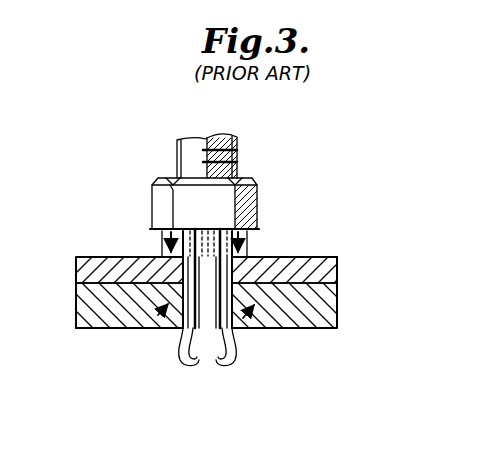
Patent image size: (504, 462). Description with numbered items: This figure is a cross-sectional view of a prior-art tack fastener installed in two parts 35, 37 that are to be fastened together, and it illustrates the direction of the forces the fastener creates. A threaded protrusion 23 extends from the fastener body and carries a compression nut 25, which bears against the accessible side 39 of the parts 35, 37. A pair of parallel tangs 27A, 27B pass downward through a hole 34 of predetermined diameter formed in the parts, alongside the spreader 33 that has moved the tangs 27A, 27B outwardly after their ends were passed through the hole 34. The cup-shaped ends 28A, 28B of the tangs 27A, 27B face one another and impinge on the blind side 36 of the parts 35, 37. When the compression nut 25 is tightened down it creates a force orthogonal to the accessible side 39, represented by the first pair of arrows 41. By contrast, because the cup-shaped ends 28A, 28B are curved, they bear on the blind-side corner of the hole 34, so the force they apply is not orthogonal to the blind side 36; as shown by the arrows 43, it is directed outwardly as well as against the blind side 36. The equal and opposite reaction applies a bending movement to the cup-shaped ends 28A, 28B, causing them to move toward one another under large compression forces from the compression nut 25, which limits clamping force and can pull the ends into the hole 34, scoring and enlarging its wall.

The threaded protrusion 23 is at (238, 148).
The compression nut 25 is at (250, 196).
The tang 27A is at (188, 271).
The tang 27B is at (292, 271).
The cup-shaped end 28A is at (183, 352).
The cup-shaped end 28B is at (233, 362).
The spreader 33 is at (205, 334).
The hole 34 is at (120, 328).
The part 35 is at (302, 263).
The blind side 36 is at (180, 291).
The part 37 is at (323, 329).
The accessible side 39 is at (100, 257).
The first pair of arrows 41 is at (162, 235).
The arrows 43 is at (158, 316).